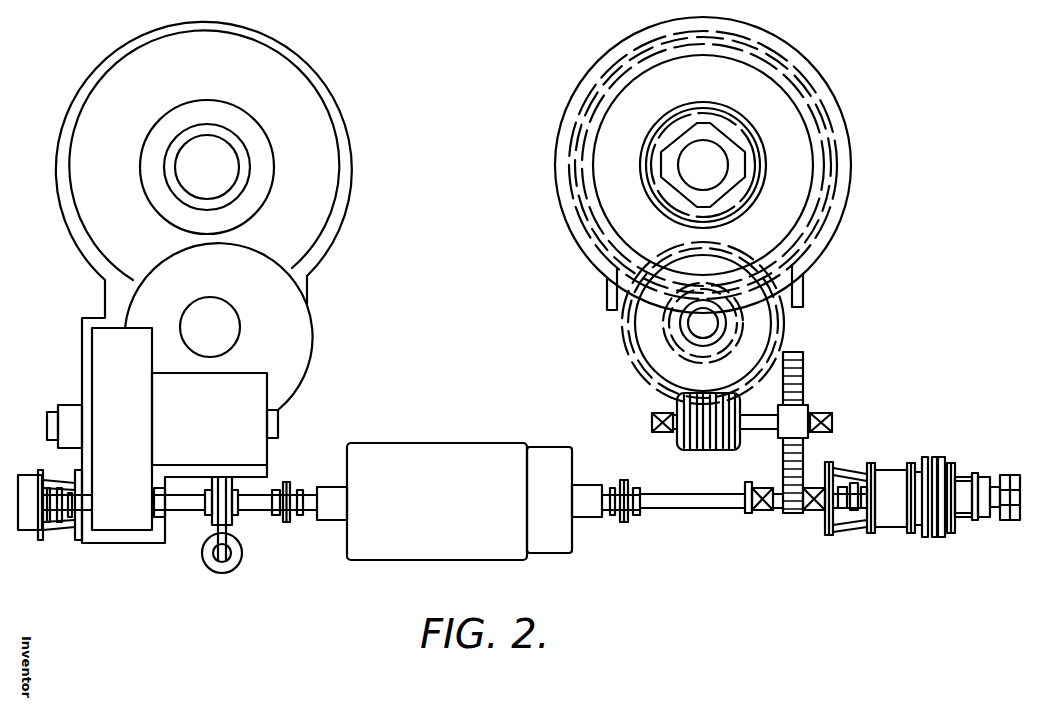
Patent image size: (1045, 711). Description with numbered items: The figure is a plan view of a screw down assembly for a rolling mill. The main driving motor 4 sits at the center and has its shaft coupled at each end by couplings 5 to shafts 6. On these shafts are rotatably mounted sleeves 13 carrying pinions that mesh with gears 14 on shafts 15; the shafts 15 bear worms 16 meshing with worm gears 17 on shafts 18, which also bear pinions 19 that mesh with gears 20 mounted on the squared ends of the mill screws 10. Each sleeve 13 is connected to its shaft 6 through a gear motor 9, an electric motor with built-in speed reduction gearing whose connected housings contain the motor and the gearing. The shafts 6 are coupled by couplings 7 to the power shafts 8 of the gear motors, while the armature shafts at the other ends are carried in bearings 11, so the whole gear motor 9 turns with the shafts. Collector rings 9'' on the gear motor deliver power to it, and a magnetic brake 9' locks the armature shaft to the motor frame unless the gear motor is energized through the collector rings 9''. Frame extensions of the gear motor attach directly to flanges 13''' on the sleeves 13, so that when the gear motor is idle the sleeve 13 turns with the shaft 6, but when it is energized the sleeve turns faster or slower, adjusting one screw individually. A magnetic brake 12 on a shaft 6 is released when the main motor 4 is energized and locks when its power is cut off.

The main driving motor 4 is at (410, 550).
The coupling 5 is at (289, 526).
The shaft 6 is at (263, 513).
The coupling 7 is at (67, 512).
The power shaft 8 is at (869, 462).
The gear motor 9 is at (899, 471).
The magnetic brake 9' is at (983, 466).
The collector rings 9'' is at (950, 469).
The mill screw 10 is at (216, 162).
The bearing 11 is at (1006, 511).
The magnetic brake 12 is at (213, 528).
The sleeve 13 is at (785, 520).
The flange 13''' is at (837, 520).
The gear 14 is at (806, 391).
The shaft 15 is at (281, 424).
The worm 16 is at (686, 444).
The worm gear 17 is at (790, 339).
The shaft 18 is at (219, 323).
The pinion 19 is at (744, 318).
The gear 20 is at (830, 218).